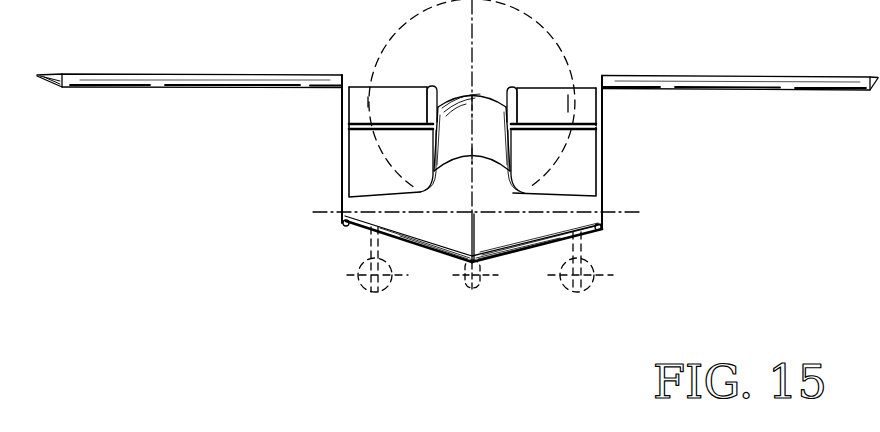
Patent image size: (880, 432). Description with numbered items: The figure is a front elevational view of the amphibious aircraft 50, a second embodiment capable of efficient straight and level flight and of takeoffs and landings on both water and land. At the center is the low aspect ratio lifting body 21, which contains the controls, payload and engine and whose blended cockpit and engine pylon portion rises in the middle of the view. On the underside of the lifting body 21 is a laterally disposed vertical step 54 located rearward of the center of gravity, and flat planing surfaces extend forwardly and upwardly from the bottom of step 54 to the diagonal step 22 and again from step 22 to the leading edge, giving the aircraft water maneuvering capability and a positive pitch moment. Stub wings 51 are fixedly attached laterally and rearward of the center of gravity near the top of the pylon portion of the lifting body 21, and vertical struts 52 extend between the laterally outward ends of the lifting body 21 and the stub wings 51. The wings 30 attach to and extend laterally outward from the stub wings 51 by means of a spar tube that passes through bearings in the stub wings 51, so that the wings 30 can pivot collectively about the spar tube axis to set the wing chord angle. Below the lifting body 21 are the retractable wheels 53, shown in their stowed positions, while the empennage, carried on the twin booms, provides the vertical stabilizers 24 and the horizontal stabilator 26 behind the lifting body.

The lifting body 21 is at (460, 200).
The diagonal step 22 is at (433, 238).
The vertical stabilizer 24 is at (342, 155).
The horizontal stabilator 26 is at (550, 130).
The wing 30 is at (197, 73).
The amphibious aircraft 50 is at (265, 222).
The stub wing 51 is at (357, 73).
The vertical strut 52 is at (342, 133).
The retractable wheel 53 is at (387, 289).
The vertical step 54 is at (522, 248).